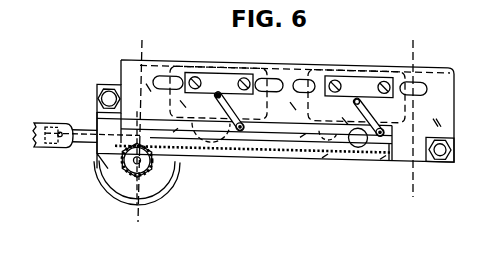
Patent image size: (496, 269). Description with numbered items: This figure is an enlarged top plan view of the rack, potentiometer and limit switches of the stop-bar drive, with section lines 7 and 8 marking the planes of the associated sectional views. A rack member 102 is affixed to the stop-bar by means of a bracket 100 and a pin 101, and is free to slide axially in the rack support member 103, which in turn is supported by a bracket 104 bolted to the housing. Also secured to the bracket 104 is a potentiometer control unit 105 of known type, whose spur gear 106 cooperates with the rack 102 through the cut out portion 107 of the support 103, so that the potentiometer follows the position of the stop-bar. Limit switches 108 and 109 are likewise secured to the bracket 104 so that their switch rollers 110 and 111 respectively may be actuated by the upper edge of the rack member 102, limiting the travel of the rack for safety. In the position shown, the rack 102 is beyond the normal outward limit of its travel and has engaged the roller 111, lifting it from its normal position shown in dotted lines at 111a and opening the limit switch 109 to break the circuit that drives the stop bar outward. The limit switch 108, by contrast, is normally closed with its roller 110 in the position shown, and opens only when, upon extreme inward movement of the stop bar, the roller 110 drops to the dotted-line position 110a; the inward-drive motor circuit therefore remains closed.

The bracket 100 is at (40, 124).
The pin 101 is at (60, 132).
The rack member 102 is at (86, 140).
The rack support member 103 is at (110, 148).
The bracket 104 is at (445, 126).
The potentiometer control unit 105 is at (108, 188).
The spur gear 106 is at (143, 164).
The cut out portion 107 is at (135, 147).
The limit switch 108 is at (263, 78).
The limit switch 109 is at (315, 82).
The switch roller 110 is at (259, 110).
The dotted-line position of roller 110 110a is at (220, 152).
The switch roller 111 is at (392, 122).
The dotted-line normal position of roller 111 111a is at (348, 160).
The section line 7- 7 is at (138, 222).
The section line 8- 8 is at (413, 190).